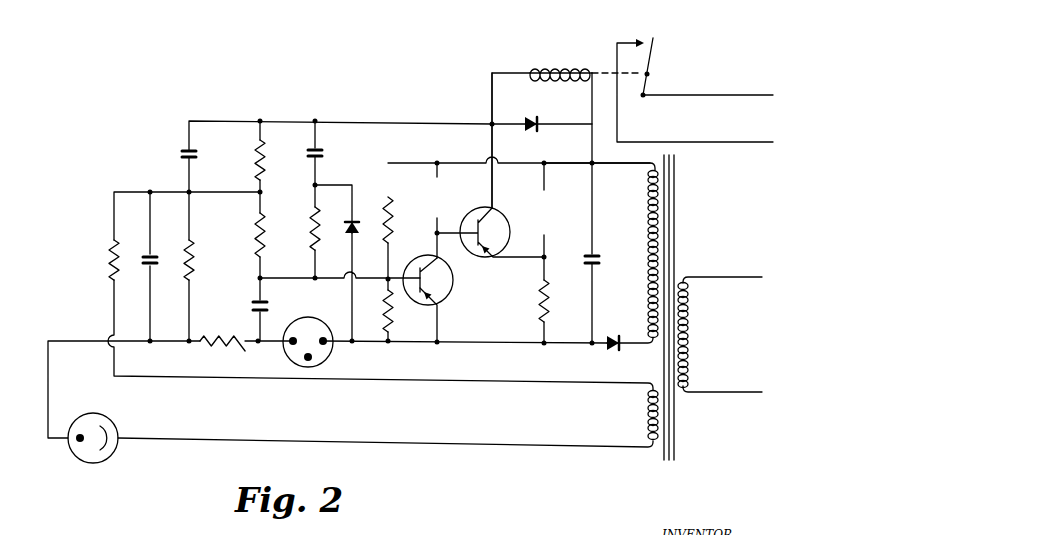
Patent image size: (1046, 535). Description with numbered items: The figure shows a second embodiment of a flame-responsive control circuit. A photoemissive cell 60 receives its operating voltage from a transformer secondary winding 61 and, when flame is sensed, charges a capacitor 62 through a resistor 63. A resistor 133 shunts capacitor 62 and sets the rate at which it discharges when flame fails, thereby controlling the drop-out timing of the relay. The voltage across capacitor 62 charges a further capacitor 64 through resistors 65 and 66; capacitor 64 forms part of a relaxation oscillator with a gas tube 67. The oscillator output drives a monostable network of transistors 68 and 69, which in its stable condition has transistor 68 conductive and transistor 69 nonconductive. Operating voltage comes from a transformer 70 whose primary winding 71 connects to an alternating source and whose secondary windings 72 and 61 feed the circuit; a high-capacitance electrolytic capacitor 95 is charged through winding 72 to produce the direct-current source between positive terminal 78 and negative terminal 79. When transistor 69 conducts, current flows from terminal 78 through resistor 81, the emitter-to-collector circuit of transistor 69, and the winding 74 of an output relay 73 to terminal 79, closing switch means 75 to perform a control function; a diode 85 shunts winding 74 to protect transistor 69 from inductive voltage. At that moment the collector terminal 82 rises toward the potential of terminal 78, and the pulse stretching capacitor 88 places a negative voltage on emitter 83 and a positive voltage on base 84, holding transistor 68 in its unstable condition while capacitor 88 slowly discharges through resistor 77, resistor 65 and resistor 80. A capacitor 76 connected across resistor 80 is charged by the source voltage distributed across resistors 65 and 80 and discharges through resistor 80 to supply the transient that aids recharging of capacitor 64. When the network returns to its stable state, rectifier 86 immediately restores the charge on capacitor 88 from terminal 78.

The photoemissive cell 60 is at (89, 413).
The transformer secondary winding 61 is at (646, 410).
The capacitor 62 is at (151, 257).
The resistor 63 is at (113, 266).
The capacitor 64 is at (268, 293).
The resistor 65 is at (257, 239).
The resistor 66 is at (216, 334).
The gas tube 67 is at (321, 321).
The transistor 68 is at (452, 270).
The transistor 69 is at (500, 225).
The transformer 70 is at (689, 205).
The primary winding 71 is at (689, 332).
The secondary winding 72 is at (648, 237).
The output relay 73 is at (565, 59).
The relay winding 74 is at (572, 82).
The switch means 75 is at (647, 39).
The capacitor 76 is at (186, 150).
The resistor 77 is at (312, 230).
The positive terminal 78 is at (587, 345).
The negative terminal 79 is at (590, 163).
The resistor 80 is at (257, 160).
The resistor 81 is at (549, 305).
The terminal 82 is at (491, 121).
The emitter 83 is at (440, 298).
The base 84 is at (411, 268).
The diode 85 is at (533, 131).
The rectifier 86 is at (350, 235).
The pulse stretching capacitor 88 is at (312, 151).
The electrolytic capacitor 95 is at (589, 254).
The resistor 133 is at (191, 274).